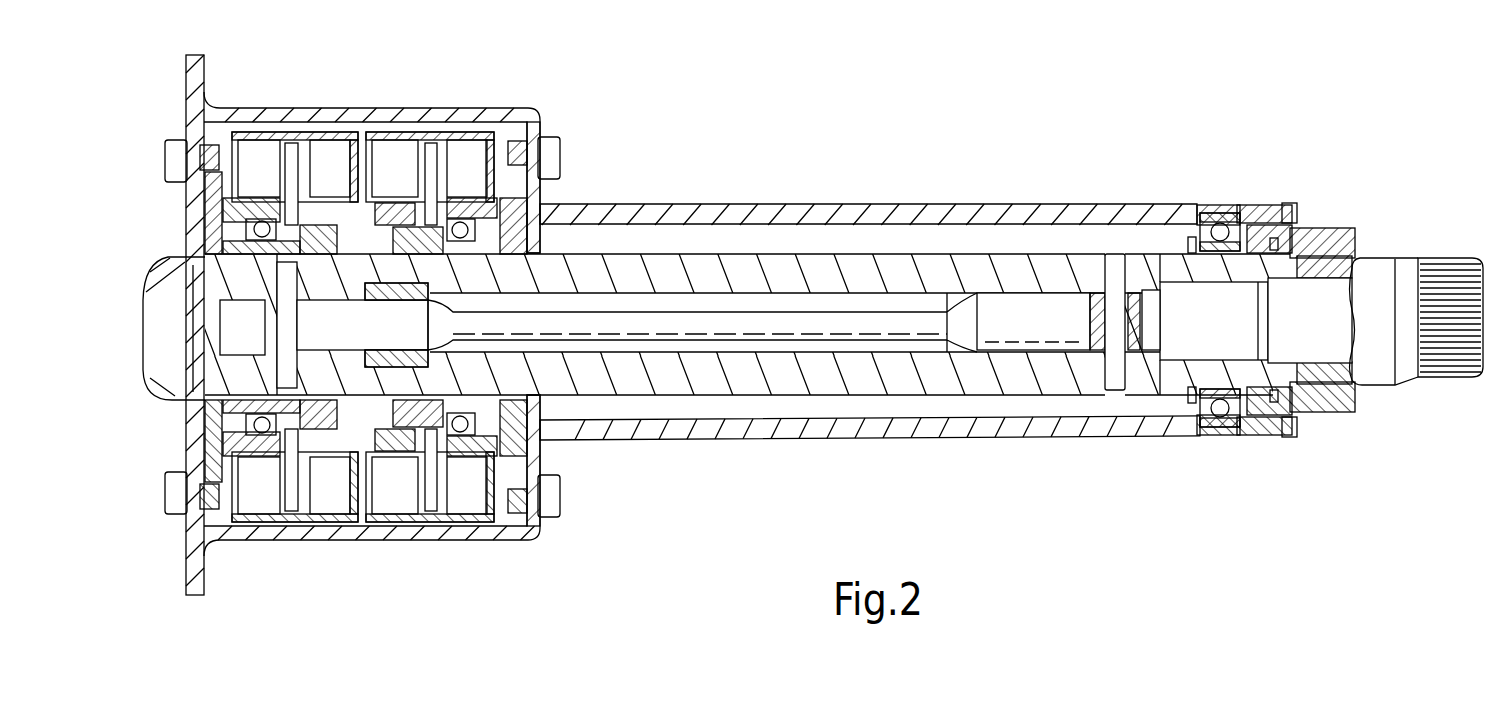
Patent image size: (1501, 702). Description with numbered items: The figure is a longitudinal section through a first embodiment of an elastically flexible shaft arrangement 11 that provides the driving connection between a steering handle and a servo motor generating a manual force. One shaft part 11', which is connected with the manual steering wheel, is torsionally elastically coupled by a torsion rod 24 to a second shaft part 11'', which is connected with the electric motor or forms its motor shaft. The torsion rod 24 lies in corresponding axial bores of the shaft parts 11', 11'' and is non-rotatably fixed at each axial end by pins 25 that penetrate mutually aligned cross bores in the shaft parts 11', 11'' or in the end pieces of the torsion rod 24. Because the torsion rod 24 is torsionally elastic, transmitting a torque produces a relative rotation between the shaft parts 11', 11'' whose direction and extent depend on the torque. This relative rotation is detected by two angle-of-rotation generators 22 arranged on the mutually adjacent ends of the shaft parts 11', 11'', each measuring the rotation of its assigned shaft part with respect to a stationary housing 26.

The shaft arrangement 11 is at (870, 264).
The shaft part 11' is at (1411, 397).
The shaft part 11'' is at (174, 293).
The angle-of-rotation generators 22 is at (274, 484).
The torsion rod 24 is at (858, 318).
The pins 25 is at (288, 327).
The housing 26 is at (497, 112).